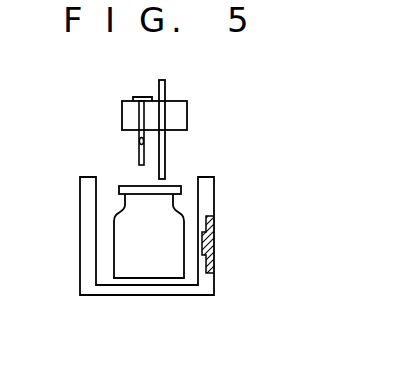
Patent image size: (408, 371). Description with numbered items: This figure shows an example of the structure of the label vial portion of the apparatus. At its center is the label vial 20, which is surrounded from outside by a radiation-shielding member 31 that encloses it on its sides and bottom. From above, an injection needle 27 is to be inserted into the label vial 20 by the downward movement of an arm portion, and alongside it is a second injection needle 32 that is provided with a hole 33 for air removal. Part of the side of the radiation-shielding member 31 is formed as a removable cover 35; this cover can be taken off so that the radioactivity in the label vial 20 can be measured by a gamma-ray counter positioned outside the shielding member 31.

The label vial 20 is at (143, 272).
The injection needle 27 is at (166, 163).
The radiation-shielding member 31 is at (88, 238).
The injection needle 32 is at (139, 155).
The hole for air removal 33 is at (139, 140).
The removable cover 35 is at (214, 241).